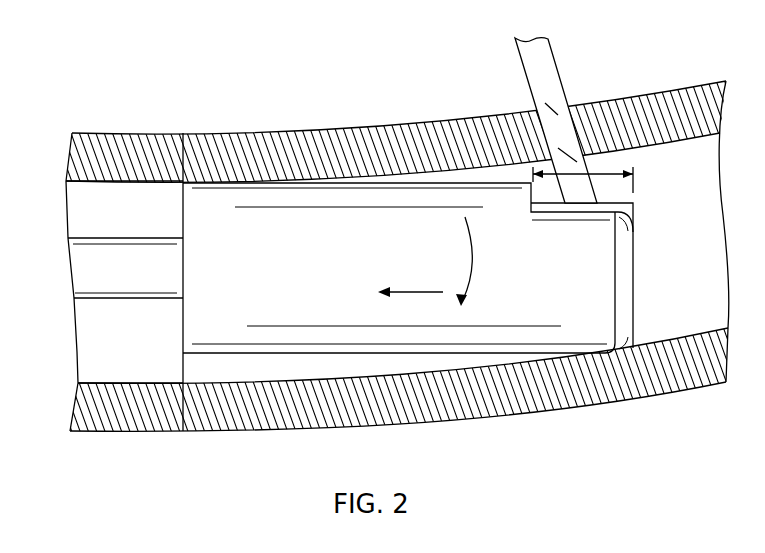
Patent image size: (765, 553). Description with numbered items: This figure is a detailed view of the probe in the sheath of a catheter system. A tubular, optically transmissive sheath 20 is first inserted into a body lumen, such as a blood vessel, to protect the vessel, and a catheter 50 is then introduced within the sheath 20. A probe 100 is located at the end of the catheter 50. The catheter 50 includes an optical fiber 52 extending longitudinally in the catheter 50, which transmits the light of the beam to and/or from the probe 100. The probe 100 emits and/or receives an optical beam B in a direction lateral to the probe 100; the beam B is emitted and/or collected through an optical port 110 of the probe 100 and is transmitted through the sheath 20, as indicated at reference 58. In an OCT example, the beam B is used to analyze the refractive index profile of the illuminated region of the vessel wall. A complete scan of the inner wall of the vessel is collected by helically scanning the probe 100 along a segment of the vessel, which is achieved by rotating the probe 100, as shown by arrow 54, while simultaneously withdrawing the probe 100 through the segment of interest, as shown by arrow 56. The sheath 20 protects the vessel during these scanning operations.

The sheath 20 is at (252, 145).
The catheter 50 is at (183, 352).
The optical fiber 52 is at (93, 269).
The arrow 54 is at (474, 256).
The arrow 56 is at (410, 292).
The reference 58 is at (541, 120).
The probe 100 is at (494, 362).
The optical port 110 is at (600, 173).
The optical beam B is at (523, 58).